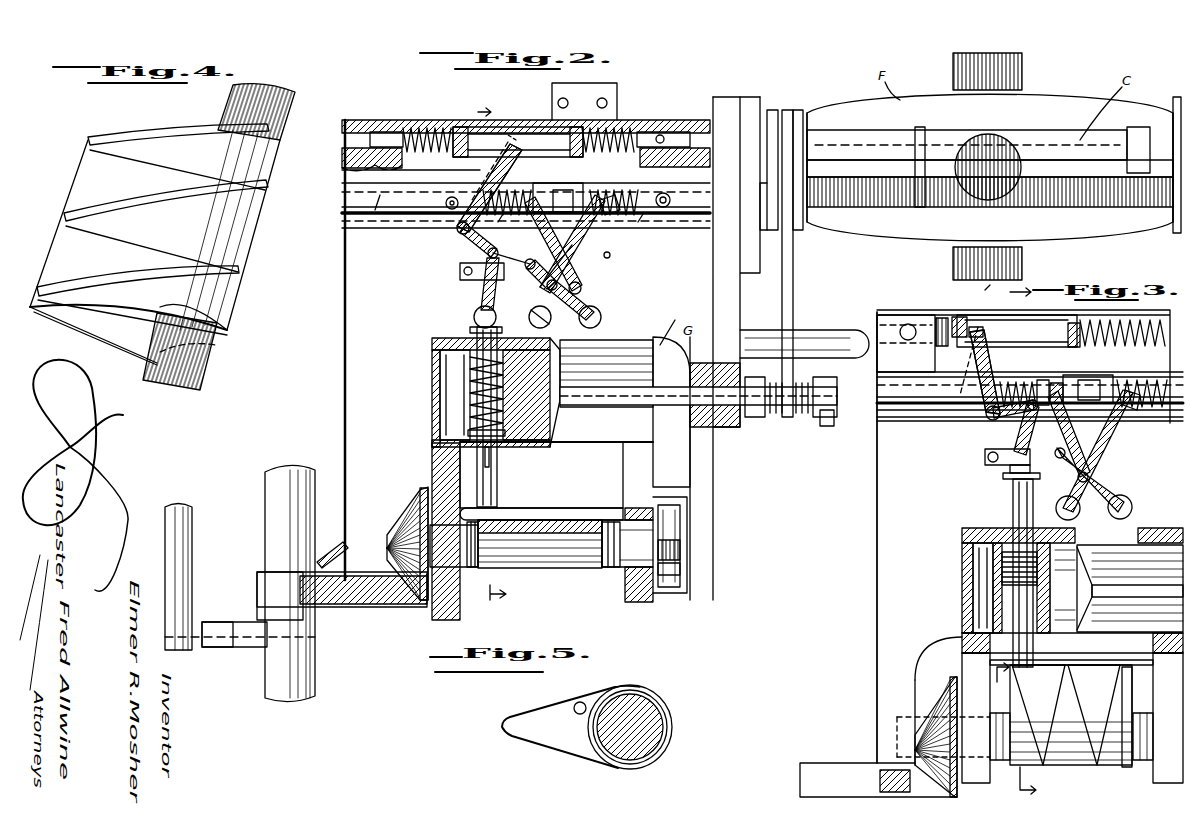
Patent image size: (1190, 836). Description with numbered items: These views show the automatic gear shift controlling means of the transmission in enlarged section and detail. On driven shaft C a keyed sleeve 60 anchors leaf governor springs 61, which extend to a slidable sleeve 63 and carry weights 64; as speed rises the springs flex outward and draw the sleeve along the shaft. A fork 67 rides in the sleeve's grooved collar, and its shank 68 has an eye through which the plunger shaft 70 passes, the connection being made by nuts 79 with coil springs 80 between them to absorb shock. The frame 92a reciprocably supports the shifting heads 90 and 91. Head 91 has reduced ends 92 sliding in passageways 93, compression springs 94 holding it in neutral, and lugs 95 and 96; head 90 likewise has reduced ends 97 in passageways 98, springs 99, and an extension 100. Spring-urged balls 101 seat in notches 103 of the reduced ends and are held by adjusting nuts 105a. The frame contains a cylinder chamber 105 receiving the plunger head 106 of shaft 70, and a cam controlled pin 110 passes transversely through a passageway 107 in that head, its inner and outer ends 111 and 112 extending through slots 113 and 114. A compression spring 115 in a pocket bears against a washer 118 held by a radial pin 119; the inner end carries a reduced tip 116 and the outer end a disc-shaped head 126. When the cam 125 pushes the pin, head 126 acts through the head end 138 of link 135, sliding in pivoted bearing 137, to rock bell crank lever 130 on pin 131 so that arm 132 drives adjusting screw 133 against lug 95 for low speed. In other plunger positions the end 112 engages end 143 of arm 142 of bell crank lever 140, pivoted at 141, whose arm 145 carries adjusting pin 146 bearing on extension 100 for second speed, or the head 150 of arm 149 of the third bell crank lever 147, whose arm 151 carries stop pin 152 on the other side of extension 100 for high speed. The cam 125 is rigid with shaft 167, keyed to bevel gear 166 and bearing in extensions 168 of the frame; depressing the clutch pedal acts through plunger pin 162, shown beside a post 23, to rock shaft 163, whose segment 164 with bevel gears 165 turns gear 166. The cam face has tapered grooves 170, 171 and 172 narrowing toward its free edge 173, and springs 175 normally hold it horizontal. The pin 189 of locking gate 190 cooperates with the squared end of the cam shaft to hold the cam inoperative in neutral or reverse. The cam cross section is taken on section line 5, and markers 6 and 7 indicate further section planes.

In FIG. 3, the section line 5 is at (1002, 665).
In FIG. 3, the section line 6 is at (1017, 542).
In FIG. 2, the section line 7 is at (492, 353).
In FIG. 2, the post 23 is at (185, 588).
In FIG. 2, the sleeve 60 is at (1130, 200).
In FIG. 2, the governor springs 61 is at (1070, 100).
In FIG. 2, the sleeve 63 is at (865, 145).
In FIG. 2, the weight 64 is at (1015, 78).
In FIG. 3, the weight 64 is at (990, 290).
In FIG. 2, the fork 67 is at (790, 125).
In FIG. 2, the shank 68 is at (793, 306).
In FIG. 2, the plunger shaft 70 is at (697, 427).
In FIG. 2, the nuts 79 is at (753, 420).
In FIG. 3, the nuts 79 is at (824, 426).
In FIG. 2, the coil springs 80 is at (787, 420).
In FIG. 3, the coil springs 80 is at (1168, 596).
In FIG. 2, the cross member 90 is at (526, 205).
In FIG. 3, the cross member 90 is at (1072, 382).
In FIG. 2, the cross member 91 is at (490, 128).
In FIG. 3, the cross member 91 is at (975, 316).
In FIG. 2, the reduced ends 92 is at (395, 135).
In FIG. 2, the frame 92a is at (344, 262).
In FIG. 3, the frame 92a is at (877, 488).
In FIG. 2, the passageways 93 is at (362, 125).
In FIG. 2, the compression springs 94 is at (612, 135).
In FIG. 3, the compression springs 94 is at (937, 346).
In FIG. 2, the lug 95 is at (462, 127).
In FIG. 3, the lug 95 is at (942, 318).
In FIG. 2, the lug 96 is at (575, 120).
In FIG. 2, the reduced ends 97 is at (505, 192).
In FIG. 3, the reduced ends 97 is at (1015, 380).
In FIG. 2, the passageways 98 is at (380, 215).
In FIG. 3, the passageways 98 is at (1090, 328).
In FIG. 2, the compression springs 99 is at (652, 236).
In FIG. 3, the compression springs 99 is at (1043, 380).
In FIG. 2, the extension 100 is at (560, 195).
In FIG. 3, the extension 100 is at (1088, 380).
In FIG. 2, the balls 101 is at (665, 135).
In FIG. 2, the notches 103 is at (342, 160).
In FIG. 2, the cylinder chamber 105 is at (590, 442).
In FIG. 2, the adjusting nuts 105a is at (670, 196).
In FIG. 3, the adjusting nuts 105a is at (905, 326).
In FIG. 2, the plunger head 106 is at (447, 203).
In FIG. 3, the plunger head 106 is at (975, 568).
In FIG. 2, the passageway 107 is at (450, 350).
In FIG. 2, the cam controlled pin 110 is at (474, 464).
In FIG. 3, the cam controlled pin 110 is at (1012, 522).
In FIG. 2, the inner end 111 is at (498, 490).
In FIG. 3, the inner end 111 is at (1030, 652).
In FIG. 2, the outer end 112 is at (497, 322).
In FIG. 3, the outer end 112 is at (1030, 478).
In FIG. 2, the slot 113 is at (562, 445).
In FIG. 2, the slot 114 is at (610, 343).
In FIG. 3, the slot 114 is at (1130, 588).
In FIG. 2, the compression spring 115 is at (504, 375).
In FIG. 3, the compression spring 115 is at (995, 580).
In FIG. 2, the reduced tip 116 is at (498, 508).
In FIG. 3, the reduced tip 116 is at (1022, 670).
In FIG. 2, the washer 118 is at (456, 434).
In FIG. 2, the radial pin 119 is at (498, 452).
In FIG. 4, the cam 125 is at (90, 188).
In FIG. 2, the cam 125 is at (556, 575).
In FIG. 3, the cam 125 is at (1090, 677).
In FIG. 5, the cam 125 is at (529, 738).
In FIG. 2, the disc-shaped head 126 is at (470, 330).
In FIG. 3, the disc-shaped head 126 is at (1008, 480).
In FIG. 2, the bell crank lever 130 is at (460, 253).
In FIG. 3, the bell crank lever 130 is at (978, 383).
In FIG. 2, the pin 131 is at (456, 230).
In FIG. 3, the pin 131 is at (985, 420).
In FIG. 2, the arm 132 is at (490, 162).
In FIG. 3, the arm 132 is at (968, 358).
In FIG. 2, the adjusting screw 133 is at (470, 265).
In FIG. 3, the adjusting screw 133 is at (1010, 425).
In FIG. 2, the connecting link 135 is at (500, 280).
In FIG. 3, the connecting link 135 is at (1032, 440).
In FIG. 2, the pivoted bearing 137 is at (483, 271).
In FIG. 3, the pivoted bearing 137 is at (1000, 460).
In FIG. 2, the head end 138 is at (497, 310).
In FIG. 2, the bell crank lever 140 is at (600, 196).
In FIG. 3, the bell crank lever 140 is at (1118, 472).
In FIG. 2, the pivot 141 is at (583, 288).
In FIG. 2, the arm 142 is at (549, 324).
In FIG. 2, the end 143 is at (531, 322).
In FIG. 3, the end 143 is at (1058, 508).
In FIG. 2, the arm 145 is at (541, 266).
In FIG. 2, the adjusting pin 146 is at (530, 215).
In FIG. 3, the adjusting pin 146 is at (1078, 434).
In FIG. 2, the bell crank lever 147 is at (580, 252).
In FIG. 3, the bell crank lever 147 is at (1113, 459).
In FIG. 2, the arm portion 149 is at (595, 302).
In FIG. 2, the head 150 is at (602, 317).
In FIG. 3, the head 150 is at (1133, 508).
In FIG. 2, the arm portion 151 is at (612, 256).
In FIG. 2, the stop pin 152 is at (610, 215).
In FIG. 3, the stop pin 152 is at (1138, 405).
In FIG. 2, the plunger pin 162 is at (252, 648).
In FIG. 2, the rocking shaft 163 is at (272, 536).
In FIG. 2, the segment 164 is at (340, 605).
In FIG. 3, the segment 164 is at (875, 778).
In FIG. 2, the bevel gears 165 is at (345, 565).
In FIG. 2, the bevel gear 166 is at (395, 512).
In FIG. 3, the bevel gear 166 is at (937, 693).
In FIG. 4, the shaft 167 is at (168, 375).
In FIG. 2, the shaft 167 is at (645, 520).
In FIG. 3, the shaft 167 is at (880, 718).
In FIG. 5, the shaft 167 is at (645, 726).
In FIG. 2, the extensions 168 is at (445, 612).
In FIG. 4, the groove 170 is at (112, 282).
In FIG. 3, the groove 170 is at (1027, 718).
In FIG. 4, the groove 171 is at (142, 206).
In FIG. 3, the groove 171 is at (1083, 718).
In FIG. 4, the groove 172 is at (170, 137).
In FIG. 3, the groove 172 is at (1130, 703).
In FIG. 4, the free end 173 is at (45, 262).
In FIG. 5, the free end 173 is at (500, 730).
In FIG. 2, the springs 175 is at (490, 550).
In FIG. 3, the springs 175 is at (1030, 762).
In FIG. 5, the springs 175 is at (657, 755).
In FIG. 2, the pin 189 is at (680, 552).
In FIG. 2, the locking gate 190 is at (680, 582).